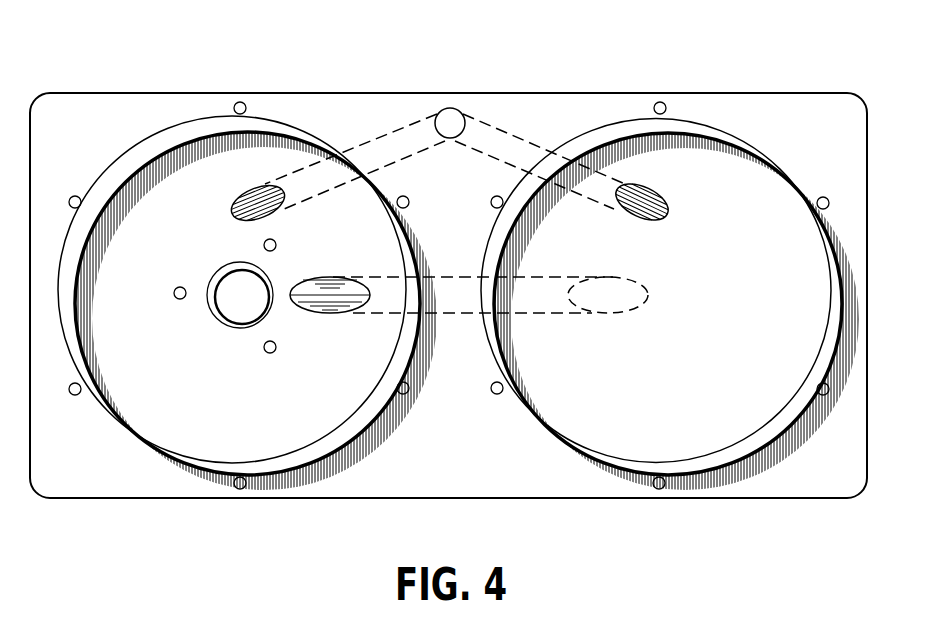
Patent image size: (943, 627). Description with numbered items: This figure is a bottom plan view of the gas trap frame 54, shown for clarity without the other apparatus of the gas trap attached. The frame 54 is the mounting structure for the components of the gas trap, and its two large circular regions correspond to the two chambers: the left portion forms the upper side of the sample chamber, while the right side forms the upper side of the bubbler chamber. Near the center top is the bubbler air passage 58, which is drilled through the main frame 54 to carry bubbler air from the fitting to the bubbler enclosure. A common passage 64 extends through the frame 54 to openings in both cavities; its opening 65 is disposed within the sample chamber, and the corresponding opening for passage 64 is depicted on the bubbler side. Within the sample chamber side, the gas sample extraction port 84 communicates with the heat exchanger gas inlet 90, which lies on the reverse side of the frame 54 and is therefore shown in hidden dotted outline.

The main frame 54 is at (427, 497).
The bubbler air passage 58 is at (449, 112).
The opening for passage 65 is at (233, 199).
The common passage 64 is at (650, 207).
The gas sample extraction port 84 is at (328, 303).
The heat exchanger gas inlet 90 is at (618, 303).